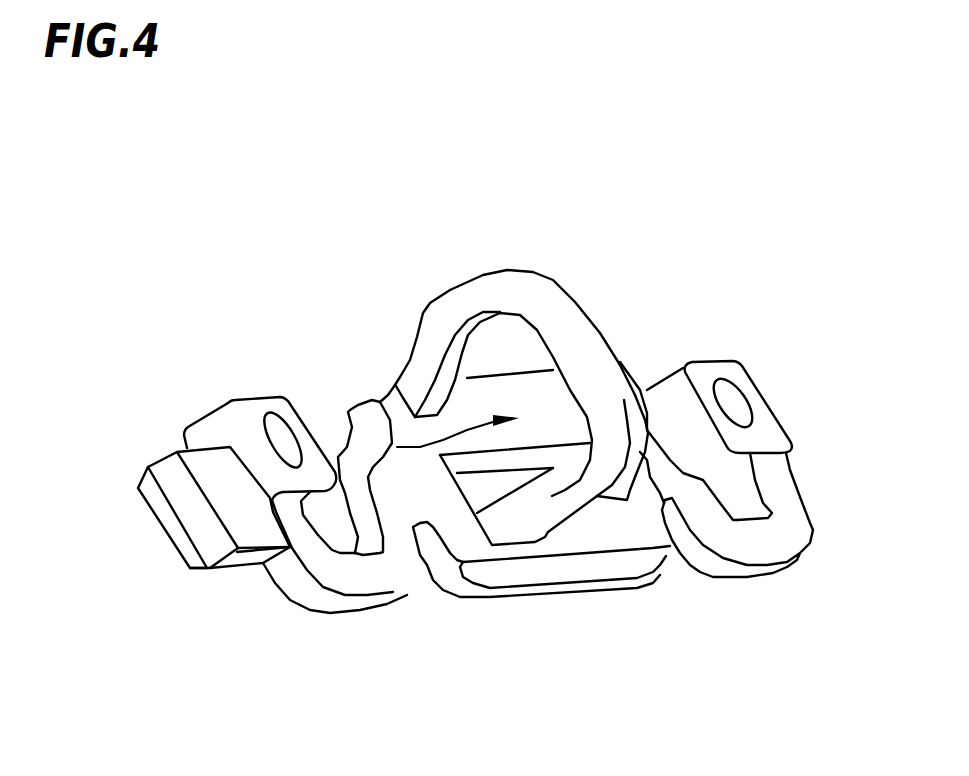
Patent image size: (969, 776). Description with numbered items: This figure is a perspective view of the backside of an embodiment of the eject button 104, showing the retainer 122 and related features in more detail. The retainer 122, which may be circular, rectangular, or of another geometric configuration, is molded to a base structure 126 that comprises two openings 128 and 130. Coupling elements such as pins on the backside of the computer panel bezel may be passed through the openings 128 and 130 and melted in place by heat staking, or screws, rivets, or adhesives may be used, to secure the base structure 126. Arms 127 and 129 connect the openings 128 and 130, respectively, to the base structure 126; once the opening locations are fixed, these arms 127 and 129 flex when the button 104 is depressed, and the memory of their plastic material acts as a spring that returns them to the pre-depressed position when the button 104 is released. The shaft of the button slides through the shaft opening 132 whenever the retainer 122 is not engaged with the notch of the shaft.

The eject button 104 is at (645, 170).
The retainer 122 is at (593, 462).
The base structure 126 is at (520, 590).
The arm 127 is at (367, 572).
The opening 128 is at (277, 437).
The arm 129 is at (757, 545).
The opening 130 is at (732, 398).
The shaft opening 132 is at (356, 398).